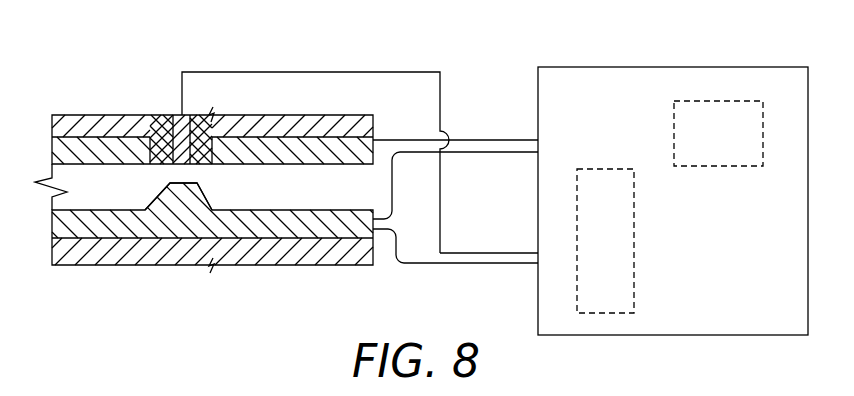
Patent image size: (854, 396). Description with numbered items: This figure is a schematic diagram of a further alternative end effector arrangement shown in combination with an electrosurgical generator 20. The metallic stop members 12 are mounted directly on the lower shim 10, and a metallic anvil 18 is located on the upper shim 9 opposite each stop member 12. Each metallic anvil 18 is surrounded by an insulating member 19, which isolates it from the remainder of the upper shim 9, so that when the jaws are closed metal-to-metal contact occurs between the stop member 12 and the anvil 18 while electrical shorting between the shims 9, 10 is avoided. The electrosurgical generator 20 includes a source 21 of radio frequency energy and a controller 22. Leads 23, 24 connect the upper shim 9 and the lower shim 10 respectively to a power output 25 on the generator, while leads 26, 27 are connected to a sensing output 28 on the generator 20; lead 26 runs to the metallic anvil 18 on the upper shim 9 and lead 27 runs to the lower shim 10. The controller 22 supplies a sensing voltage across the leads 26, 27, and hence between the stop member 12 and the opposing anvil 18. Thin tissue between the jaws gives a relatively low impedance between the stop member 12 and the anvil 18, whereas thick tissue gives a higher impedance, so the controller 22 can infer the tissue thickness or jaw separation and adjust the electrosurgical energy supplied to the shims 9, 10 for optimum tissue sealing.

The upper shim 9 is at (77, 145).
The lower shim 10 is at (322, 232).
The stop member 12 is at (188, 212).
The metallic anvil 18 is at (162, 140).
The insulating member 19 is at (198, 140).
The electrosurgical generator 20 is at (541, 67).
The source of radio frequency energy 21 is at (733, 100).
The controller 22 is at (640, 295).
The lead 23 is at (409, 138).
The lead 24 is at (420, 154).
The power output 25 is at (536, 139).
The lead 26 is at (443, 203).
The lead 27 is at (425, 265).
The sensing output 28 is at (535, 266).